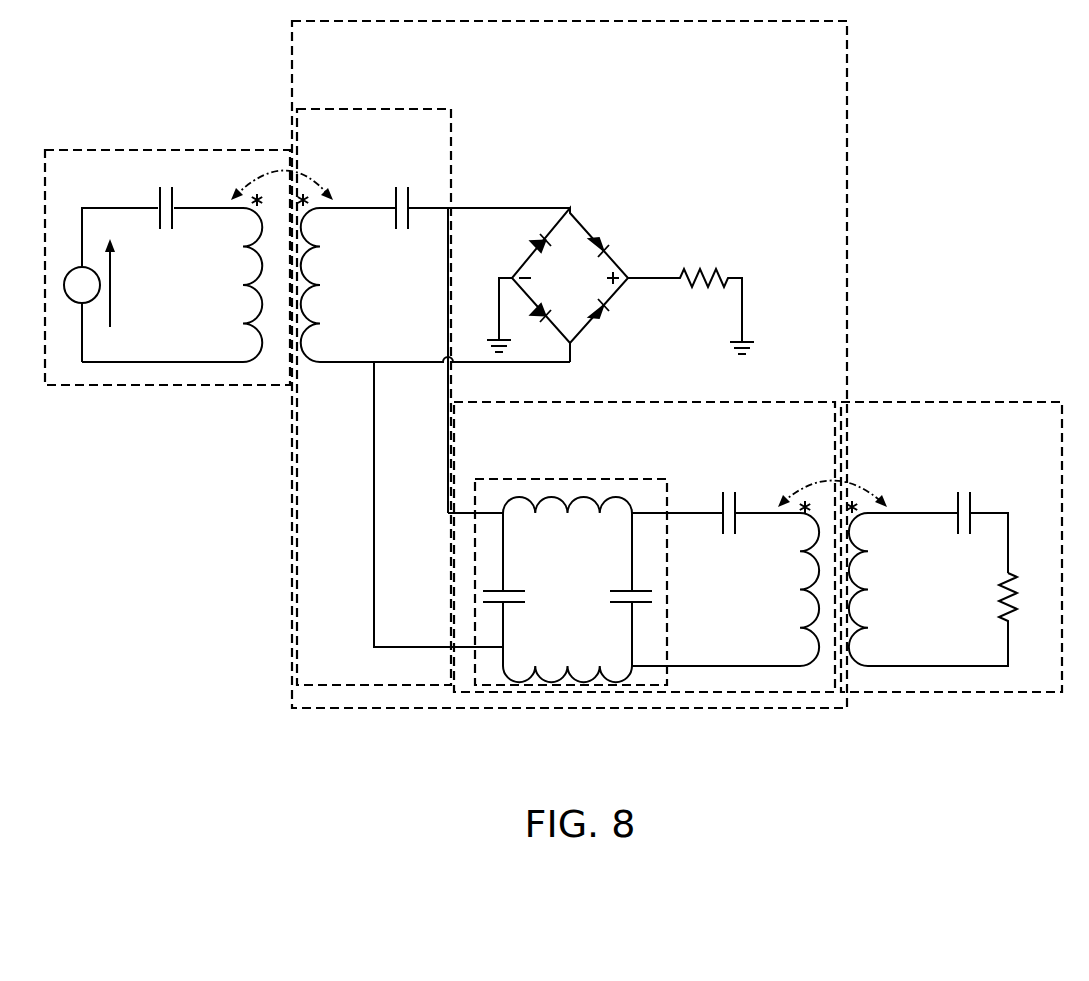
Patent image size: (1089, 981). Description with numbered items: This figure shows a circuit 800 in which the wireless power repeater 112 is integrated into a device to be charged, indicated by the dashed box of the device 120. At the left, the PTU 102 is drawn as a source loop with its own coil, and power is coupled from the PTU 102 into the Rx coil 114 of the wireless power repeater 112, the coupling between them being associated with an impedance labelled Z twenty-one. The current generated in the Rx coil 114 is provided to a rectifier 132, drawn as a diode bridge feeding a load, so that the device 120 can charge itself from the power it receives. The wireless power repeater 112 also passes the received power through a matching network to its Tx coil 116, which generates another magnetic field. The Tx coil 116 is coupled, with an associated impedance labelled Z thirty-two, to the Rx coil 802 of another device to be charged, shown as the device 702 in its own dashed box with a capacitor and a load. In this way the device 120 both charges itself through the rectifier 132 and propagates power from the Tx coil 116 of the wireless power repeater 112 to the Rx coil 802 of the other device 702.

The wireless power transfer system 800 is at (598, 784).
The PTU 102 is at (160, 150).
The wireless power repeater 112 is at (360, 108).
The Rx coil 114 is at (310, 300).
The Tx coil 116 is at (798, 600).
The device 120 is at (847, 160).
The rectifier 132 is at (587, 230).
The device 702 is at (951, 527).
The Rx coil 802 is at (860, 600).